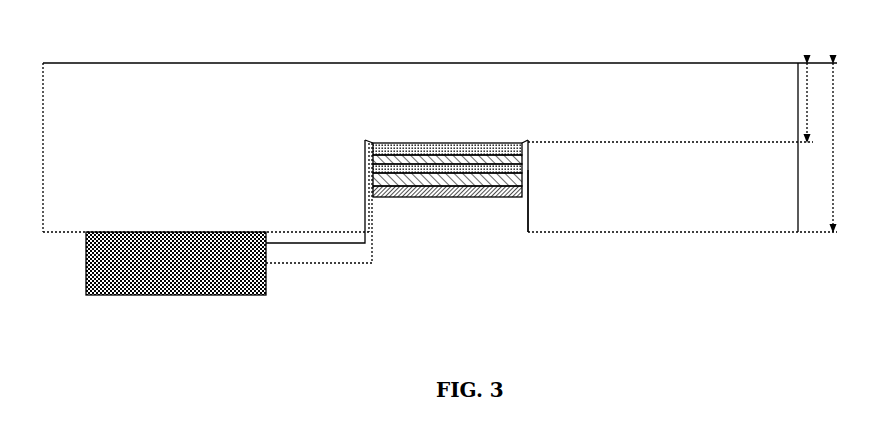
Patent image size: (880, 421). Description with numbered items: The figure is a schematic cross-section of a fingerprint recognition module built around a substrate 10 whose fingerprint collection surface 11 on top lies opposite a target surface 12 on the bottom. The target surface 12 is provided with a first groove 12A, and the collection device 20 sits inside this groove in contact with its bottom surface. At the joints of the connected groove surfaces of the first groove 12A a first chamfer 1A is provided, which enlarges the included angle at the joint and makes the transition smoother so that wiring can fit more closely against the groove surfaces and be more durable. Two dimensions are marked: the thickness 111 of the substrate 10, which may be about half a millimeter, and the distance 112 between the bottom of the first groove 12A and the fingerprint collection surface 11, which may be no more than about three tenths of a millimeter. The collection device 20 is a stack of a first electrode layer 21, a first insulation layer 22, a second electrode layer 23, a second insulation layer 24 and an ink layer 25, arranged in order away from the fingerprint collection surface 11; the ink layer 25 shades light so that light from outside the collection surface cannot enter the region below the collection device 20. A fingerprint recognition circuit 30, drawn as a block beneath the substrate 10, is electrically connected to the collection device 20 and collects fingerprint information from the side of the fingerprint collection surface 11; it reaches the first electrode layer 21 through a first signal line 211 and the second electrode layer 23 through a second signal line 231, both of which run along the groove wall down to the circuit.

The substrate 10 is at (583, 81).
The fingerprint collection surface 11 is at (618, 63).
The target surface 12 is at (614, 233).
The first groove 12A is at (531, 205).
The thickness of the substrate 111 is at (846, 147).
The distance between bottom surface of first groove and fingerprint collection surfa 112 is at (819, 102).
The first chamfer 1A is at (368, 141).
The collection device 20 is at (447, 230).
The first electrode layer 21 is at (401, 149).
The first insulation layer 22 is at (422, 160).
The second electrode layer 23 is at (444, 170).
The second insulation layer 24 is at (466, 181).
The ink layer 25 is at (447, 213).
The first signal line 211 is at (316, 246).
The second signal line 231 is at (358, 266).
The fingerprint recognition circuit 30 is at (267, 279).